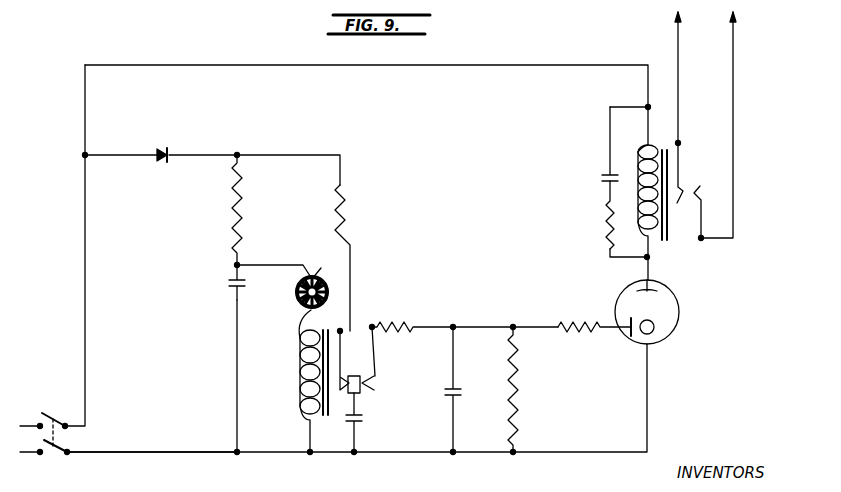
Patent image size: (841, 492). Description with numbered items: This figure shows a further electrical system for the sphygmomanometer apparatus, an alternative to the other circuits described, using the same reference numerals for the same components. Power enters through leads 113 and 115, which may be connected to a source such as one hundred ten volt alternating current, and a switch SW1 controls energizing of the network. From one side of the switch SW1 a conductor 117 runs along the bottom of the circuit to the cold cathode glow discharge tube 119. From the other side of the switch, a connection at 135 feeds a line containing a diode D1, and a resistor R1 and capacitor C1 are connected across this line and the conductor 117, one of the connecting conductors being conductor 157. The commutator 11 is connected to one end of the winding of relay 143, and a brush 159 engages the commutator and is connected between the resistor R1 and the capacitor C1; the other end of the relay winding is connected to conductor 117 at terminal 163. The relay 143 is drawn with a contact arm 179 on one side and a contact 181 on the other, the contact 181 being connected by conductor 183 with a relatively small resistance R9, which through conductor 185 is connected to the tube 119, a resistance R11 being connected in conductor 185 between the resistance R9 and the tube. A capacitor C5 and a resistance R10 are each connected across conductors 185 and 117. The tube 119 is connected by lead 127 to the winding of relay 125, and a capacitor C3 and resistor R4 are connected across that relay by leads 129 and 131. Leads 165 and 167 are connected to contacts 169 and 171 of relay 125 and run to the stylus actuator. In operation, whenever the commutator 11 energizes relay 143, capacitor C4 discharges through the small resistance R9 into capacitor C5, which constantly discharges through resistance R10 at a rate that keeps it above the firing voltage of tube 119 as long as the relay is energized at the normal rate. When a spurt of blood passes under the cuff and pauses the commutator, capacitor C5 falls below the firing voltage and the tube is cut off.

The commutator 11 is at (327, 290).
The lead 113 is at (20, 426).
The lead 115 is at (38, 455).
The switch SW1 is at (52, 458).
The conductor 117 is at (180, 453).
The connection point 135 is at (85, 155).
The diode D1 is at (168, 153).
The resistor R1 is at (243, 210).
The capacitor C1 is at (232, 287).
The conductor 157 is at (237, 390).
The brush 159 is at (290, 265).
The terminal 163 is at (308, 455).
The relay 143 is at (330, 434).
The contact arm 179 is at (344, 383).
The relay contact 181 is at (376, 384).
The conductor 183 is at (374, 350).
The capacitor C4 is at (359, 420).
The resistance R9 is at (412, 313).
The conductor 185 is at (476, 327).
The capacitor C5 is at (458, 391).
The resistance R10 is at (519, 383).
The resistance R11 is at (566, 332).
The cold cathode glow discharge tube 119 is at (668, 318).
The lead 127 is at (625, 285).
The lead 131 is at (612, 262).
The resistor R4 is at (603, 226).
The capacitor C3 is at (598, 184).
The lead 129 is at (609, 118).
The lead 165 is at (678, 112).
The lead 167 is at (734, 125).
The relay contact 169 is at (683, 190).
The relay contact 171 is at (699, 188).
The relay 125 is at (684, 236).